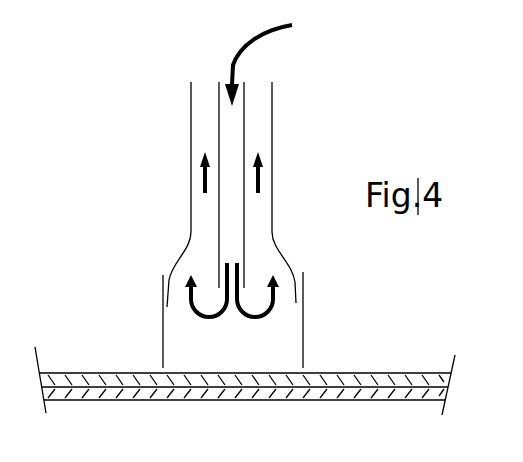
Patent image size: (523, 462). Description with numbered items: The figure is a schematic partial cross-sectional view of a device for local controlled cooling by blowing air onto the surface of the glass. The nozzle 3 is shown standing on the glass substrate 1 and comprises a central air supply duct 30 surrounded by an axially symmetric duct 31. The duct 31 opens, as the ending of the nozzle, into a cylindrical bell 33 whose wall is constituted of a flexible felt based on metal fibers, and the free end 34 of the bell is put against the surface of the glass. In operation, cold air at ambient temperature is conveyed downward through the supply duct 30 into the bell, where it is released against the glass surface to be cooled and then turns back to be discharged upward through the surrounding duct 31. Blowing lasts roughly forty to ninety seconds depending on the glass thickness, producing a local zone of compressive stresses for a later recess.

The glass substrate 1 is at (370, 352).
The nozzle 3 is at (123, 235).
The central air supply duct 30 is at (228, 123).
The axially symmetric duct 31 is at (263, 175).
The cylindrical bell 33 is at (163, 312).
The free end of the bell 34 is at (160, 368).